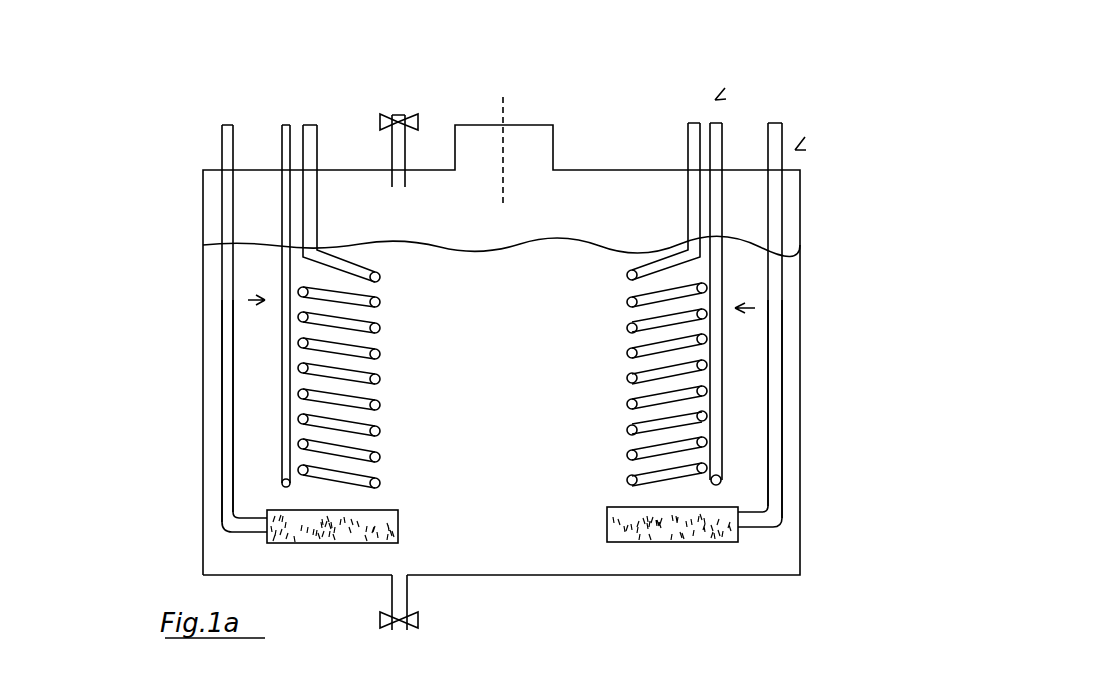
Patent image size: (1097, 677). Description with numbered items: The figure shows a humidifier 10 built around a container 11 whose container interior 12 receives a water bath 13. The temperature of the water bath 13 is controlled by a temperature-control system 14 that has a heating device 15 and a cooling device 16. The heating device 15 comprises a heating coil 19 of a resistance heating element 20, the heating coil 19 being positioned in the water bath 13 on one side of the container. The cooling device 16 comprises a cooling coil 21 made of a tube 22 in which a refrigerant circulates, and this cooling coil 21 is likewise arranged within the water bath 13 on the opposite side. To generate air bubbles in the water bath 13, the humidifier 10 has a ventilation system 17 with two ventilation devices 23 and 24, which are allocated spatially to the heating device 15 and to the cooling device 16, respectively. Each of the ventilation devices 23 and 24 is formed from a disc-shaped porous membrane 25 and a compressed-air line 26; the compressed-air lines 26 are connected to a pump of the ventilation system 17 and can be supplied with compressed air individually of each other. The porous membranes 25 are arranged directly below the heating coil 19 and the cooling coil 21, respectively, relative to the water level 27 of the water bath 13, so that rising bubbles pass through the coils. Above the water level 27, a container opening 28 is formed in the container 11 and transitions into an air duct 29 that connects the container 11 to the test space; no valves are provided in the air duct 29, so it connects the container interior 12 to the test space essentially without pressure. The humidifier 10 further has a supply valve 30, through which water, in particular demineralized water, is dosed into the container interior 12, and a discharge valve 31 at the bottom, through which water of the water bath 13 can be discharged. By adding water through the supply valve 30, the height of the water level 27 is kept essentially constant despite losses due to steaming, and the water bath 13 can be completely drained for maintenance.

The humidifier 10 is at (148, 156).
The container 11 is at (801, 194).
The container interior 12 is at (626, 219).
The water bath 13 is at (495, 540).
The temperature-control system 14 is at (715, 100).
The heating device 15 is at (248, 300).
The cooling device 16 is at (755, 308).
The ventilation system 17 is at (795, 150).
The heating coil 19 is at (287, 366).
The resistance heating element 20 is at (305, 378).
The cooling coil 21 is at (722, 390).
The tube 22 is at (710, 355).
The ventilation device 23 is at (208, 507).
The ventilation device 24 is at (805, 502).
The porous membrane 25 is at (333, 530).
The compressed-air line 26 is at (228, 442).
The water level 27 is at (247, 240).
The container opening 28 is at (536, 163).
The air duct 29 is at (475, 145).
The supply valve 30 is at (386, 121).
The discharge valve 31 is at (410, 618).